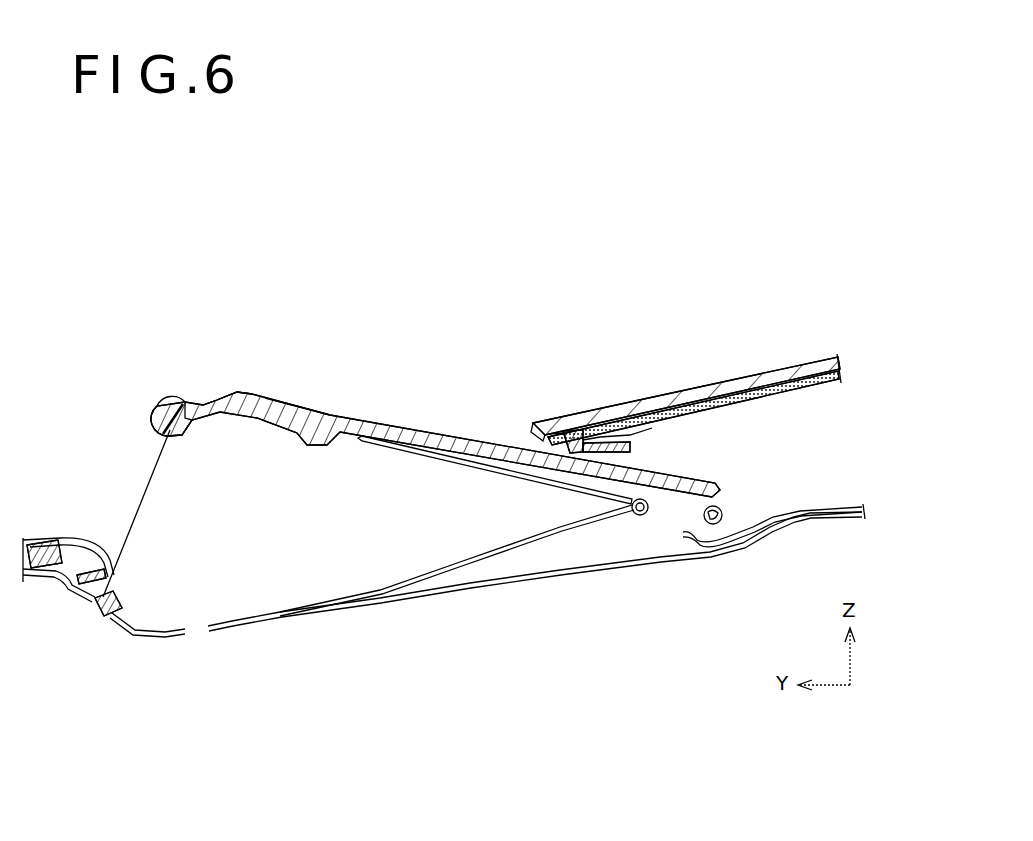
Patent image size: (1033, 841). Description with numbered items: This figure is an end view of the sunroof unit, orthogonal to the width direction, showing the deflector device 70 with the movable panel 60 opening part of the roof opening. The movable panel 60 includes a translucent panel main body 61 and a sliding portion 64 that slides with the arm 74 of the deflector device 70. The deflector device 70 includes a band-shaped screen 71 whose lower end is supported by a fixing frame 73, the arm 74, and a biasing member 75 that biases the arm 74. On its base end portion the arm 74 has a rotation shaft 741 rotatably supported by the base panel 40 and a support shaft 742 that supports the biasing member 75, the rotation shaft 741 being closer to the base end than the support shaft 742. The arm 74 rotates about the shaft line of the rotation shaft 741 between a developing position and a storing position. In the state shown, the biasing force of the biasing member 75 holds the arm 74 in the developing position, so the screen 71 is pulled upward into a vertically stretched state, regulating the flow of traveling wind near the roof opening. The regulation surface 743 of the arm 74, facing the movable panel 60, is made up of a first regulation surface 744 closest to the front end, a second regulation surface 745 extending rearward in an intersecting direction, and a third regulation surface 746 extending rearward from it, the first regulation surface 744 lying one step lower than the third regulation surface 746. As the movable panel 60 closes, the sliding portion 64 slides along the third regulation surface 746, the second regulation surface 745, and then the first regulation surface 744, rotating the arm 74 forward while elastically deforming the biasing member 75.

The deflector device 70 is at (161, 233).
The arm 74 is at (303, 446).
The first regulation surface 744 is at (182, 401).
The second regulation surface 745 is at (234, 392).
The third regulation surface 746 is at (301, 404).
The regulation surface 743 is at (279, 426).
The support shaft 742 is at (630, 506).
The rotation shaft 741 is at (720, 509).
The movable panel 60 is at (686, 381).
The panel main body 61 is at (727, 376).
The sliding portion 64 is at (633, 446).
The biasing member 75 is at (445, 586).
The base panel 40 is at (665, 572).
The fixing frame 73 is at (122, 600).
The screen 71 is at (140, 491).